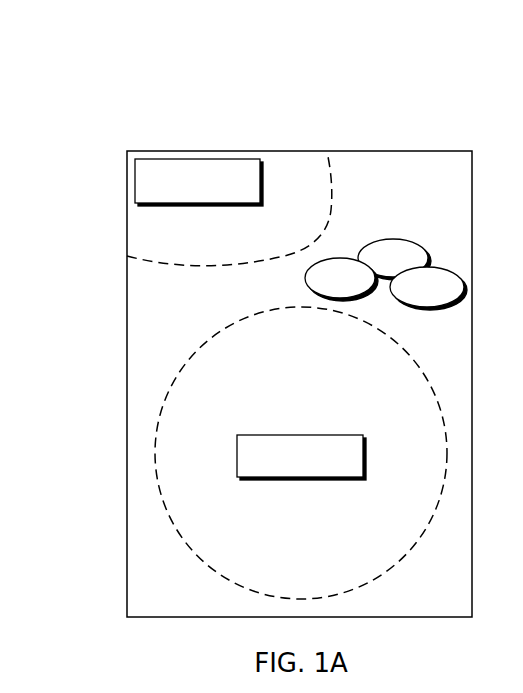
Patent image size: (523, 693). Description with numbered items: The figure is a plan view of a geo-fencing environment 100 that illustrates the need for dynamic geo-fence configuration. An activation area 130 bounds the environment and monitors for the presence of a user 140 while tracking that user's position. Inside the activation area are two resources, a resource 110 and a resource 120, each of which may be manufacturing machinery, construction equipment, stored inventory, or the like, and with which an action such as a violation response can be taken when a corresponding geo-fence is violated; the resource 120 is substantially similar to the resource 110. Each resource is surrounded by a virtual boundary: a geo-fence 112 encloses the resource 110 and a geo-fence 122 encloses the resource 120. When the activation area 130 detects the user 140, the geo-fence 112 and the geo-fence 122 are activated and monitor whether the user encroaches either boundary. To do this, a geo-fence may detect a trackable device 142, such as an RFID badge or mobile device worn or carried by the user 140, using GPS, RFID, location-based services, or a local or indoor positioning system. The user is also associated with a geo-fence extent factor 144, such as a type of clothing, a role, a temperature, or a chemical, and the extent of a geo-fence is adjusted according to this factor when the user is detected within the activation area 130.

The geo-fencing environment 100 is at (93, 137).
The activation area 130 is at (352, 150).
The geo-fence 122 is at (187, 265).
The resource 120 is at (183, 198).
The geo-fence 112 is at (380, 575).
The resource 110 is at (286, 473).
The user 140 is at (412, 238).
The trackable device 142 is at (413, 296).
The geo-fence extent factor 144 is at (326, 287).